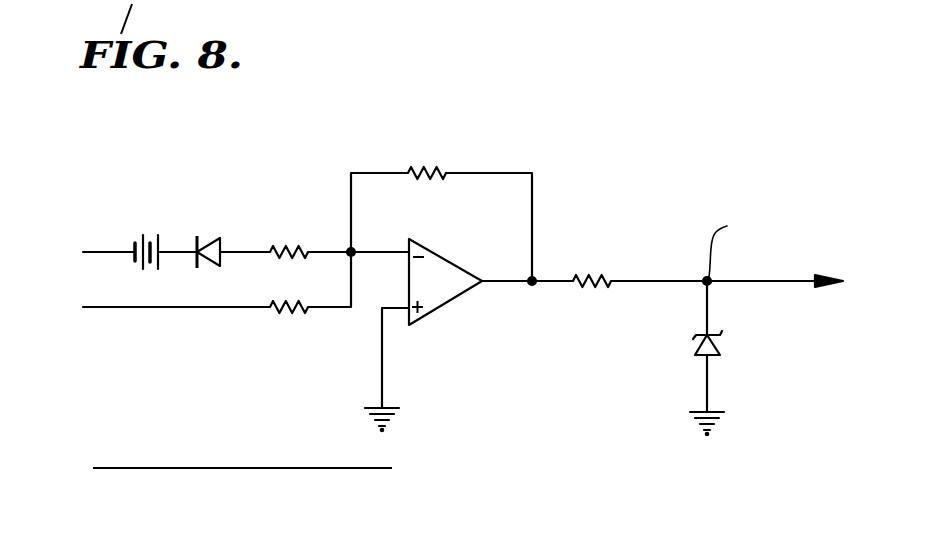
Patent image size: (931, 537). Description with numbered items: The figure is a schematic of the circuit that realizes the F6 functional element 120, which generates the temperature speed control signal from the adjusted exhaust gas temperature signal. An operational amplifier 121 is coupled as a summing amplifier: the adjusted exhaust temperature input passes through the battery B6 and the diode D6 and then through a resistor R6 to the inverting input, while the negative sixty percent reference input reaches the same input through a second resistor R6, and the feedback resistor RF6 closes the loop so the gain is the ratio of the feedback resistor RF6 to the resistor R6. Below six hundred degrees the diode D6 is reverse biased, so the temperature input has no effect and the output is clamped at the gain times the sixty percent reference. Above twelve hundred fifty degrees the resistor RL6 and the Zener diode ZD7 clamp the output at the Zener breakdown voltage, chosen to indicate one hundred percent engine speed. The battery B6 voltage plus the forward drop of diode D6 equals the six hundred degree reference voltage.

The F6 functional element 120 is at (432, 309).
The operational amplifier 121 is at (453, 300).
The battery B6 is at (135, 260).
The diode D6 is at (220, 243).
The resistor R6 is at (289, 267).
The feedback resistor RF6 is at (429, 164).
The resistor RL6 is at (592, 270).
The Zener diode ZD7 is at (722, 343).